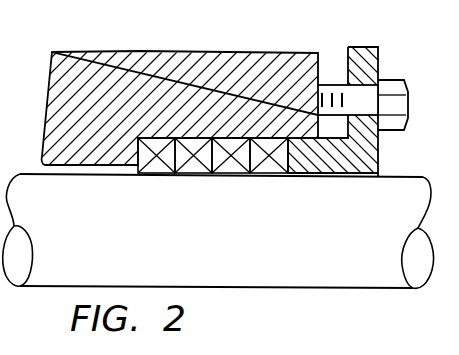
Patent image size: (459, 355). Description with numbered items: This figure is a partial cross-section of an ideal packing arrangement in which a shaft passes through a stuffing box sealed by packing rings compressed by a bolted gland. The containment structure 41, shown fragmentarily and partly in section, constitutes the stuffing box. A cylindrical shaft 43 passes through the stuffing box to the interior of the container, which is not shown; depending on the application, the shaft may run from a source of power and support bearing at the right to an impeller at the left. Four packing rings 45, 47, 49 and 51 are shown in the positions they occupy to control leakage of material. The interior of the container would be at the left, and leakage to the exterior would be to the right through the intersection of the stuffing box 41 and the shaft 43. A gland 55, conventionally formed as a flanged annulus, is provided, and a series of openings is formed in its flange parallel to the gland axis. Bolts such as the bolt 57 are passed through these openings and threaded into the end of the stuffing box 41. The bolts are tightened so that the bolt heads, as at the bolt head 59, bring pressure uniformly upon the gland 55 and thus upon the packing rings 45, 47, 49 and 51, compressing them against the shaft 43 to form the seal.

The containment structure 41 is at (193, 56).
The cylindrical shaft 43 is at (110, 277).
The packing ring 45 is at (158, 167).
The packing ring 47 is at (195, 167).
The packing ring 49 is at (232, 167).
The packing ring 51 is at (267, 167).
The gland 55 is at (368, 48).
The bolt 57 is at (355, 97).
The bolt head 59 is at (409, 82).